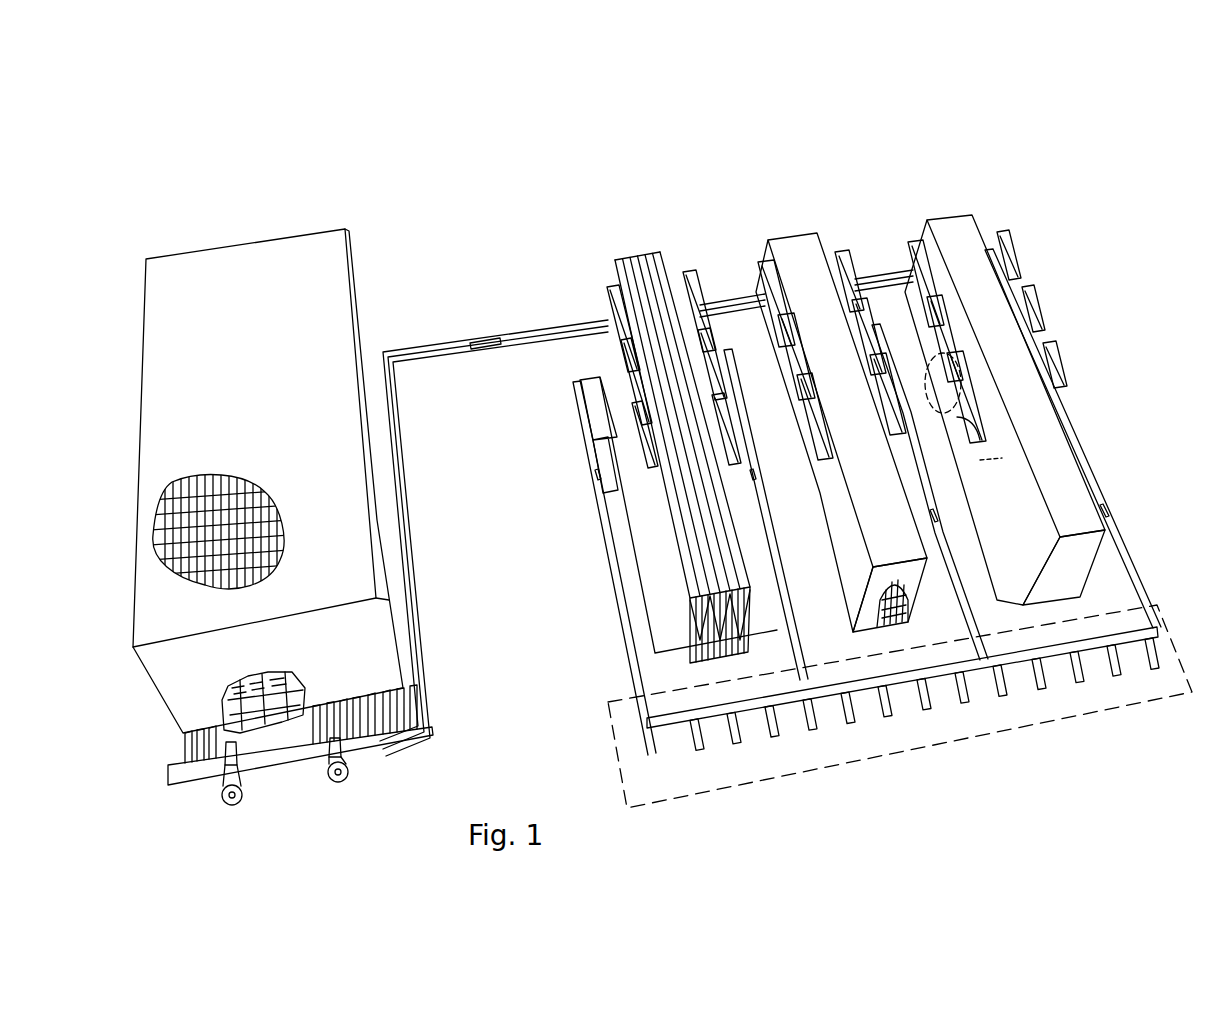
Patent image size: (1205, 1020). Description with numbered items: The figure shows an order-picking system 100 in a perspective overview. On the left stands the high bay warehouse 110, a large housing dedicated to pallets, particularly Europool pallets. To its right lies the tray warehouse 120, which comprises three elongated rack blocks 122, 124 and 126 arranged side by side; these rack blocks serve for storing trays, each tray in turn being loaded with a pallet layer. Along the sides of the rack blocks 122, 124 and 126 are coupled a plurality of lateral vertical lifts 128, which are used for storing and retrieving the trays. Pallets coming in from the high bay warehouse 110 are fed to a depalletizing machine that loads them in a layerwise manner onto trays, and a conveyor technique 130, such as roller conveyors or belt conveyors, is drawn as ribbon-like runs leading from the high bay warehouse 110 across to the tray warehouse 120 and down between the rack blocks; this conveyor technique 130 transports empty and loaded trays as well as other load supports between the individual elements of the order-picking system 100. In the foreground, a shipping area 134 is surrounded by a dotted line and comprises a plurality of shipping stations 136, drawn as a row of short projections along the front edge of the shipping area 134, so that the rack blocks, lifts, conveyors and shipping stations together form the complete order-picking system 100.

The order-picking system 100 is at (547, 165).
The high bay warehouse 110 is at (293, 224).
The tray warehouse 120 is at (793, 222).
The rack block 122 is at (618, 258).
The rack block 124 is at (812, 232).
The rack block 126 is at (945, 216).
The lateral vertical lifts 128 is at (612, 300).
The conveyor technique 130 is at (487, 356).
The shipping area 134 is at (617, 760).
The shipping stations 136 is at (681, 747).